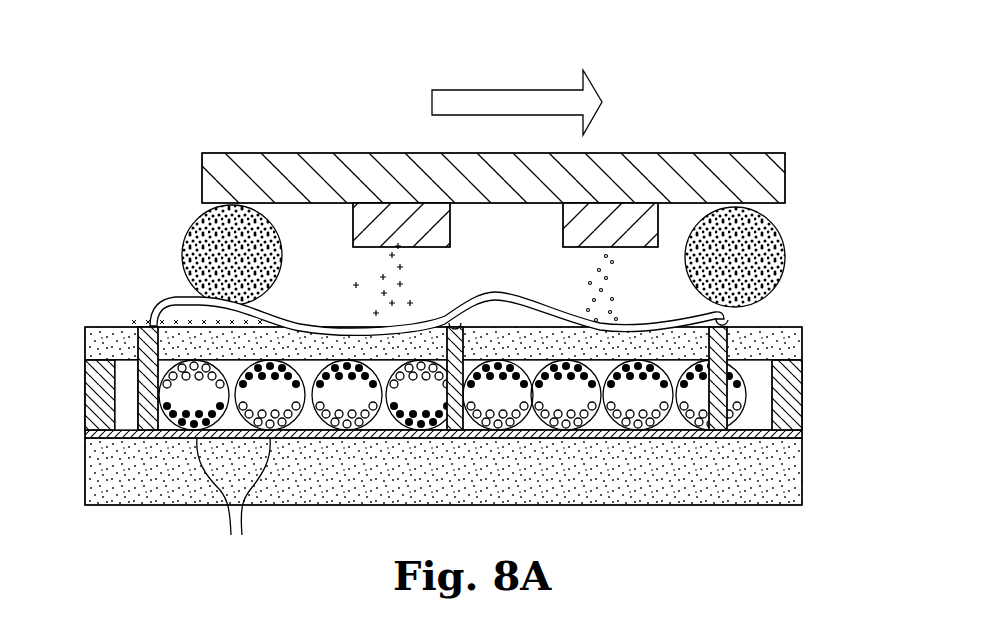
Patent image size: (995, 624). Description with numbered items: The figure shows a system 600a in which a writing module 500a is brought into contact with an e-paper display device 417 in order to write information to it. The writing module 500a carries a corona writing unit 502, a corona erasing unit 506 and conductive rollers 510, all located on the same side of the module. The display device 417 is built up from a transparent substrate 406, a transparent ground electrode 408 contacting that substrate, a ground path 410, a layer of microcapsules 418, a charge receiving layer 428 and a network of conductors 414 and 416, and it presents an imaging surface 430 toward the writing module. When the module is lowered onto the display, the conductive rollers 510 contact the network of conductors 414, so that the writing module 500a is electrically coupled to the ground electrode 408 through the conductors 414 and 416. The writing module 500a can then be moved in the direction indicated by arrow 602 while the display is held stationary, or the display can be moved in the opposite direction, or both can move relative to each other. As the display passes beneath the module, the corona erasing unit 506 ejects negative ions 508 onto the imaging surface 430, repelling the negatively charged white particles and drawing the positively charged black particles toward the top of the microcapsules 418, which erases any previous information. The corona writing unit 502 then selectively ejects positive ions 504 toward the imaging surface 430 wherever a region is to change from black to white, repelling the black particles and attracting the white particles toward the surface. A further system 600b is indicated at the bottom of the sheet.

The transparent substrate 406 is at (436, 480).
The transparent ground electrode 408 is at (804, 434).
The ground path 410 is at (86, 392).
The network of conductors 414 is at (277, 313).
The network of conductors 416 is at (139, 348).
The e-paper display 417 is at (812, 392).
The microcapsules 418 is at (234, 499).
The charge receiving layer 428 is at (804, 346).
The imaging surface 430 is at (778, 327).
The writing module 500a is at (700, 151).
The corona writing unit 502 is at (450, 216).
The positive ions 504 is at (412, 283).
The corona erasing unit 506 is at (563, 226).
The negative ions 508 is at (616, 296).
The conductive rollers 510 is at (185, 232).
The system 600a is at (574, 42).
The process step 600b is at (588, 623).
The arrow 602 is at (466, 98).